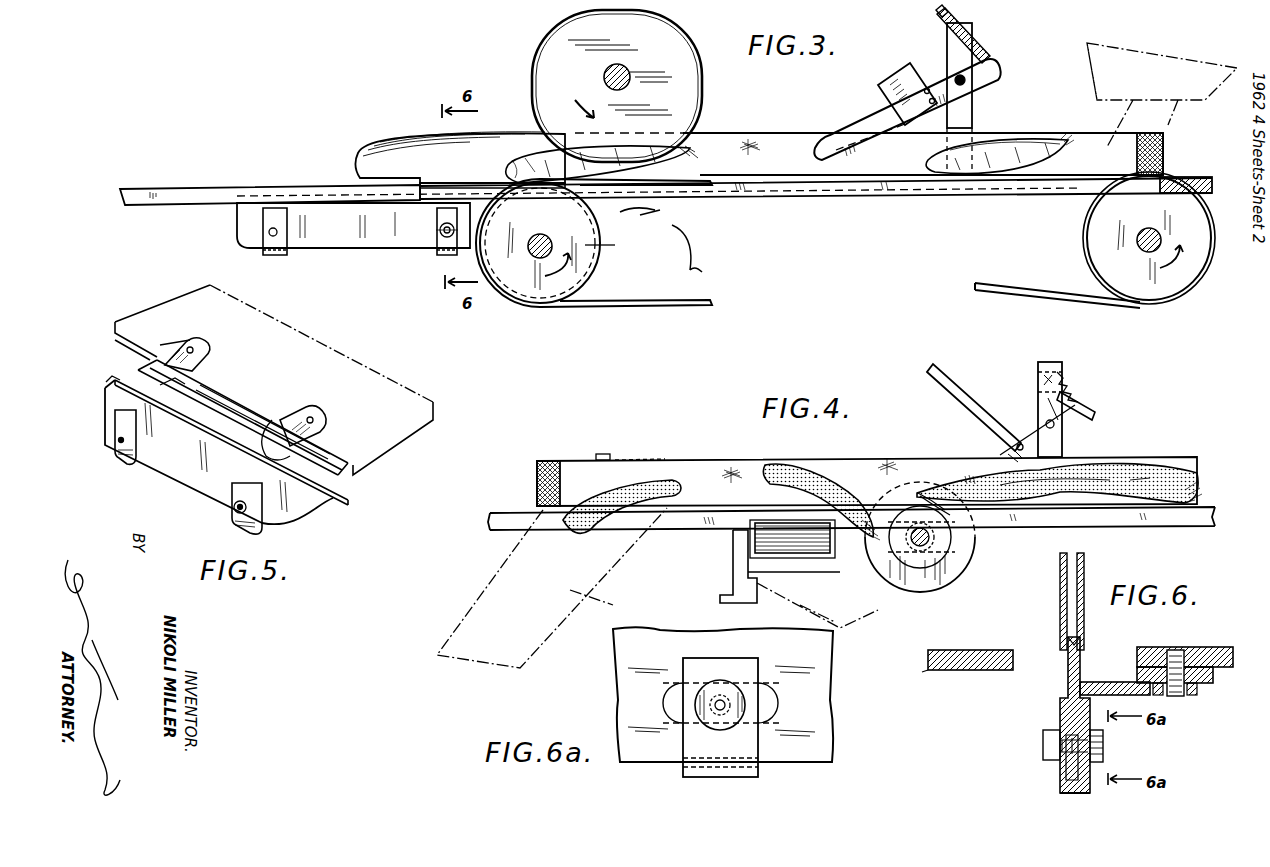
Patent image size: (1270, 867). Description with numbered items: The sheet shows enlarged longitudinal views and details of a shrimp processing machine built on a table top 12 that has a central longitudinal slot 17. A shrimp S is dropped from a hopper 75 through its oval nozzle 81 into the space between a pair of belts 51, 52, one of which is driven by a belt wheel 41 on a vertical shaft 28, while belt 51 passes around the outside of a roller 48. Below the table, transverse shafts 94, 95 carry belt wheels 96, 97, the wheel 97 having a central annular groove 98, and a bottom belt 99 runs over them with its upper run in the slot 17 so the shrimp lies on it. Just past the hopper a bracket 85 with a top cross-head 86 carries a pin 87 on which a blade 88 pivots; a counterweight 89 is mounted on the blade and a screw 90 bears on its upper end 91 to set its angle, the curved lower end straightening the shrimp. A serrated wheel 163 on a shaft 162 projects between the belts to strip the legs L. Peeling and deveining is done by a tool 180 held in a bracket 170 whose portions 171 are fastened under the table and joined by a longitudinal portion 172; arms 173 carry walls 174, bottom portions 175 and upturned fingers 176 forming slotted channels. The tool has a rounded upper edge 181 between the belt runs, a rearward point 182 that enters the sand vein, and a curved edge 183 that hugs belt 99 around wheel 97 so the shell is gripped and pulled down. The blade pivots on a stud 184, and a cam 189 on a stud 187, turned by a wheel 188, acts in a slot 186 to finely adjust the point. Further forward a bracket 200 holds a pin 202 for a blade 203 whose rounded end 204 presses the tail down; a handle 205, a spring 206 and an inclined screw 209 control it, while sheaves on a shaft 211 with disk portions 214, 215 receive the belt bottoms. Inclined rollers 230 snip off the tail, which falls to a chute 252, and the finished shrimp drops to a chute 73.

In FIG. 3, the table top wall 12 is at (1186, 176).
In FIG. 5, the table top wall 12 is at (160, 305).
In FIG. 4, the table top wall 12 is at (851, 518).
In FIG. 6, the table top wall 12 is at (988, 673).
In FIG. 3, the central longitudinal slot 17 is at (180, 186).
In FIG. 4, the vertical shaft 28 is at (606, 456).
In FIG. 4, the belt wheel 41 is at (583, 460).
In FIG. 3, the roller 48 is at (1116, 124).
In FIG. 6, the belt 51 is at (1060, 587).
In FIG. 6, the belt 52 is at (1084, 583).
In FIG. 4, the chute 73 is at (598, 596).
In FIG. 3, the hopper 75 is at (1147, 47).
In FIG. 3, the nozzle 81 is at (1178, 114).
In FIG. 3, the bracket 85 is at (980, 22).
In FIG. 3, the top cross-head 86 is at (946, 47).
In FIG. 3, the pin 87 is at (966, 84).
In FIG. 3, the blade 88 is at (905, 124).
In FIG. 3, the counterweight 89 is at (888, 83).
In FIG. 3, the screw 90 is at (936, 16).
In FIG. 3, the upper end of blade 91 is at (985, 63).
In FIG. 3, the transverse horizontal shaft 94 is at (1150, 232).
In FIG. 3, the transverse horizontal shaft 95 is at (548, 240).
In FIG. 3, the belt wheel 96 is at (1098, 218).
In FIG. 3, the belt wheel 97 is at (615, 245).
In FIG. 3, the central annular groove 98 is at (590, 262).
In FIG. 3, the bottom belt 99 is at (1076, 300).
In FIG. 3, the shaft 162 is at (603, 77).
In FIG. 3, the wheel 163 is at (557, 34).
In FIG. 5, the bracket 170 is at (233, 371).
In FIG. 6, the bracket 170 is at (1224, 699).
In FIG. 5, the portions 171 is at (205, 350).
In FIG. 5, the longitudinal portion 172 is at (250, 402).
In FIG. 5, the arms 173 is at (158, 382).
In FIG. 6, the arms 173 is at (1103, 681).
In FIG. 6, the walls 174 is at (1095, 774).
In FIG. 6A, the walls 174 is at (718, 750).
In FIG. 6, the bottom belt portions 175 is at (1060, 788).
In FIG. 5, the fingers 176 is at (118, 416).
In FIG. 6, the fingers 176 is at (1064, 763).
In FIG. 3, the peeling and deveining tool 180 is at (362, 248).
In FIG. 5, the peeling and deveining tool 180 is at (188, 468).
In FIG. 6, the peeling and deveining tool 180 is at (1068, 672).
In FIG. 6A, the peeling and deveining tool 180 is at (632, 703).
In FIG. 3, the upper rounded longitudinal edge 181 is at (455, 180).
In FIG. 5, the upper rounded longitudinal edge 181 is at (327, 463).
In FIG. 6, the upper rounded longitudinal edge 181 is at (1082, 634).
In FIG. 3, the rearwardly pointed end 182 is at (545, 140).
In FIG. 5, the rearwardly pointed end 182 is at (350, 503).
In FIG. 3, the curved edge 183 is at (488, 212).
In FIG. 5, the curved edge 183 is at (318, 502).
In FIG. 3, the transverse stud 184 is at (277, 234).
In FIG. 5, the transverse stud 184 is at (118, 443).
In FIG. 3, the longitudinal slot 186 is at (445, 238).
In FIG. 5, the longitudinal slot 186 is at (235, 505).
In FIG. 6, the longitudinal slot 186 is at (1046, 756).
In FIG. 6A, the longitudinal slot 186 is at (640, 698).
In FIG. 6, the stud 187 is at (1100, 745).
In FIG. 6A, the stud 187 is at (700, 730).
In FIG. 3, the wheel 188 is at (440, 228).
In FIG. 5, the wheel 188 is at (236, 511).
In FIG. 6, the wheel 188 is at (1105, 758).
In FIG. 6A, the wheel 188 is at (732, 730).
In FIG. 6, the cam 189 is at (1046, 735).
In FIG. 6A, the cam 189 is at (740, 690).
In FIG. 4, the bracket 200 is at (1043, 352).
In FIG. 4, the pin 202 is at (1056, 426).
In FIG. 4, the blade 203 is at (1080, 420).
In FIG. 4, the rounded lower end 204 is at (952, 515).
In FIG. 4, the handle 205 is at (967, 400).
In FIG. 4, the spring 206 is at (1071, 390).
In FIG. 4, the inclined screw 209 is at (1040, 378).
In FIG. 4, the transverse horizontal shaft 211 is at (935, 546).
In FIG. 4, the annular disk portion 214 is at (930, 586).
In FIG. 4, the inner disk portion 215 is at (946, 560).
In FIG. 4, the rollers 230 is at (800, 558).
In FIG. 4, the chute 252 is at (840, 620).
In FIG. 3, the shrimp S is at (510, 163).
In FIG. 4, the shrimp S is at (662, 480).
In FIG. 3, the legs or feathers L is at (1020, 112).